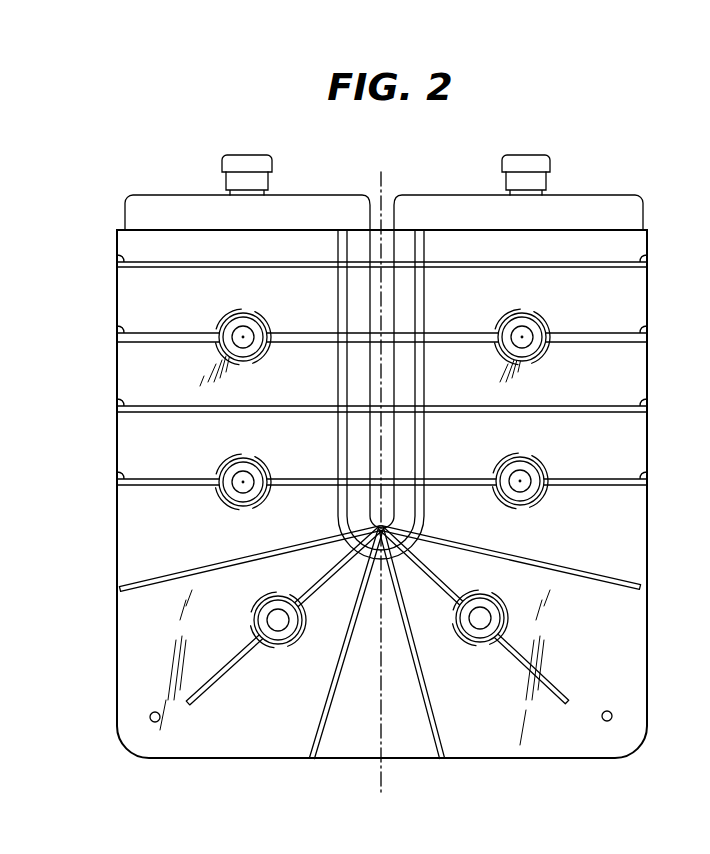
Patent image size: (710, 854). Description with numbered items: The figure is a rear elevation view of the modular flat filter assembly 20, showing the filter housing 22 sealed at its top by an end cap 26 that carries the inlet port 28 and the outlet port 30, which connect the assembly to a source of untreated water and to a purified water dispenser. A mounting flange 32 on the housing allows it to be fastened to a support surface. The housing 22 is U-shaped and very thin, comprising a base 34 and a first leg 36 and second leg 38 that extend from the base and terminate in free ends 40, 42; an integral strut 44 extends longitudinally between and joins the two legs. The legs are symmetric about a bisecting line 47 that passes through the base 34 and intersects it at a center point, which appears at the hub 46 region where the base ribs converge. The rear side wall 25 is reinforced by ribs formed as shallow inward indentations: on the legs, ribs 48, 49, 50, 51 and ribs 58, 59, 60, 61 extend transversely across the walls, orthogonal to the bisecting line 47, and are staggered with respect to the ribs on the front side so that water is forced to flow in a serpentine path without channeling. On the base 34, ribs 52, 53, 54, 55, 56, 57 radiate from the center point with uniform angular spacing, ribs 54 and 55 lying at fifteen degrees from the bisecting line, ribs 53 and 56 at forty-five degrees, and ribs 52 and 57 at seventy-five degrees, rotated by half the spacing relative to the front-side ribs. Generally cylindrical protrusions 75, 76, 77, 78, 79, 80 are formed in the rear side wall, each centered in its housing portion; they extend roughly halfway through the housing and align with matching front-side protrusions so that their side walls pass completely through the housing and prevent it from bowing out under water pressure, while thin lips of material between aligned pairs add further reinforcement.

The modular flat filter assembly 20 is at (420, 193).
The filter housing 22 is at (652, 312).
The rear side wall 25 is at (637, 458).
The end cap 26 is at (637, 207).
The inlet port 28 is at (544, 155).
The outlet port 30 is at (238, 155).
The mounting flange 32 is at (620, 750).
The base 34 is at (405, 750).
The first leg 36 is at (632, 372).
The second leg 38 is at (118, 368).
The free end 40 is at (646, 232).
The free end 42 is at (117, 230).
The integral strut 44 is at (392, 193).
The hub 46 is at (386, 520).
The bisecting line 47 is at (368, 190).
The rib 48 is at (120, 262).
The rib 49 is at (120, 333).
The rib 50 is at (120, 406).
The rib 51 is at (172, 479).
The rib 52 is at (178, 570).
The rib 53 is at (206, 697).
The rib 54 is at (305, 746).
The rib 55 is at (442, 742).
The rib 56 is at (537, 668).
The rib 57 is at (612, 572).
The rib 58 is at (615, 479).
The rib 59 is at (615, 406).
The rib 60 is at (615, 333).
The rib 61 is at (647, 268).
The protrusion 75 is at (228, 318).
The protrusion 76 is at (264, 462).
The protrusion 77 is at (273, 648).
The protrusion 78 is at (504, 610).
The protrusion 79 is at (514, 460).
The protrusion 80 is at (518, 318).